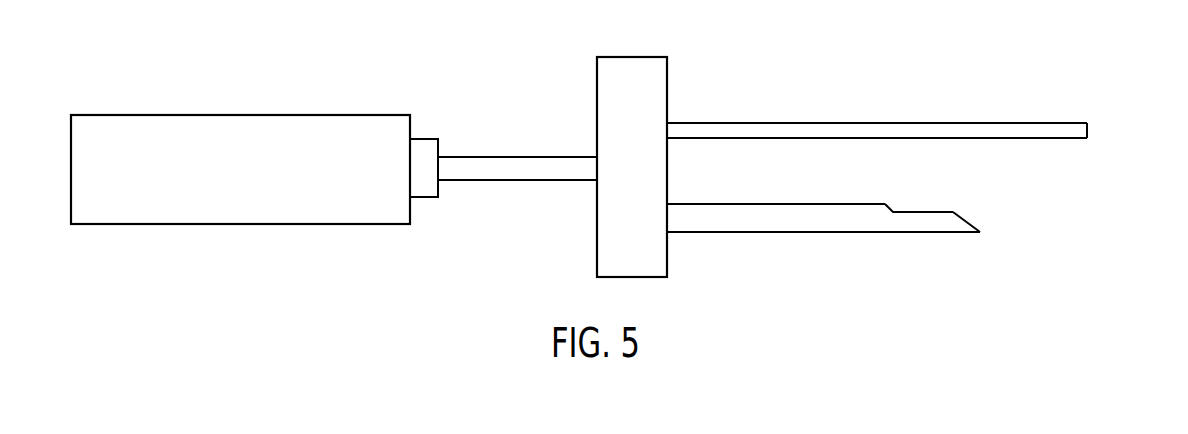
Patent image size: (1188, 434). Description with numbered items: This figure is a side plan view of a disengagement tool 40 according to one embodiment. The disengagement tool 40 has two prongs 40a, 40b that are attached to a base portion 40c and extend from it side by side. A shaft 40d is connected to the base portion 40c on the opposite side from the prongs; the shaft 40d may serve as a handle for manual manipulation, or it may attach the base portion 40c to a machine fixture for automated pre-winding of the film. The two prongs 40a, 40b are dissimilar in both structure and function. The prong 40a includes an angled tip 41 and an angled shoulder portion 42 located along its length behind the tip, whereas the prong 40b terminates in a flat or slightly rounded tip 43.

The disengagement tool 40 is at (447, 73).
The prong 40a is at (785, 226).
The prong 40b is at (848, 125).
The base portion 40c is at (662, 174).
The shaft 40d is at (276, 182).
The angled tip 41 is at (980, 231).
The angled shoulder portion 42 is at (890, 205).
The flat or slightly rounded tip 43 is at (1088, 131).